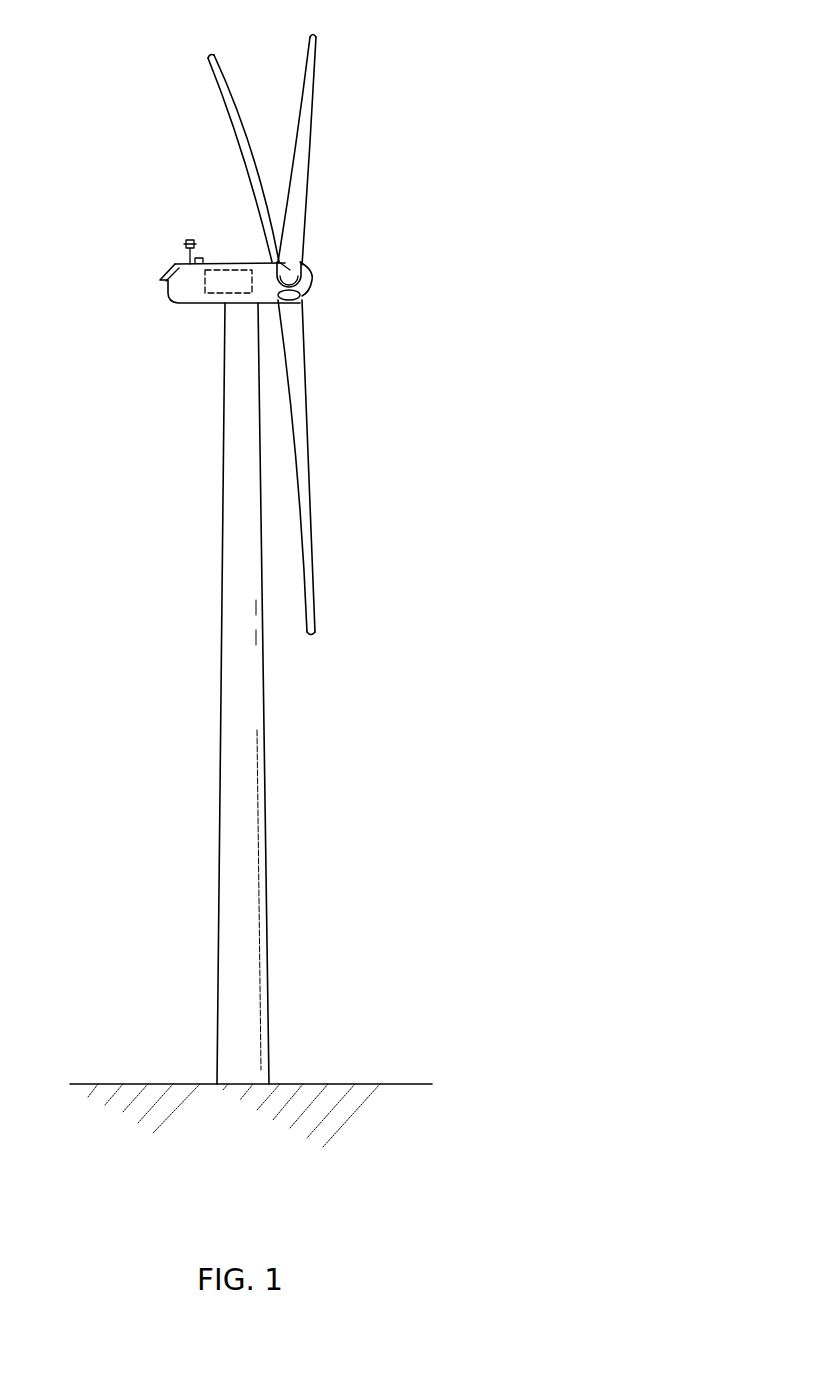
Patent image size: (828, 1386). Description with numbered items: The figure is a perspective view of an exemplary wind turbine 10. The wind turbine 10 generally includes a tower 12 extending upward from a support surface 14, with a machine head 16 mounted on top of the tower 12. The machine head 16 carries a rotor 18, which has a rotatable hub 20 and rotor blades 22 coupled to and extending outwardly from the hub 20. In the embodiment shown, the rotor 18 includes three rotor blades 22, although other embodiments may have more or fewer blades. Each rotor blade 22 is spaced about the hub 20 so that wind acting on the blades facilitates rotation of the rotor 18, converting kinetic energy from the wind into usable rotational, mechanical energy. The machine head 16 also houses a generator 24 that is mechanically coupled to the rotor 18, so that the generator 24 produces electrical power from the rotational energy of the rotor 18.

The wind turbine 10 is at (593, 96).
The tower 12 is at (232, 803).
The support surface 14 is at (152, 1084).
The machine head 16 is at (203, 305).
The rotor 18 is at (317, 257).
The rotatable hub 20 is at (312, 277).
The rotor blade 22 is at (307, 73).
The generator 24 is at (223, 268).